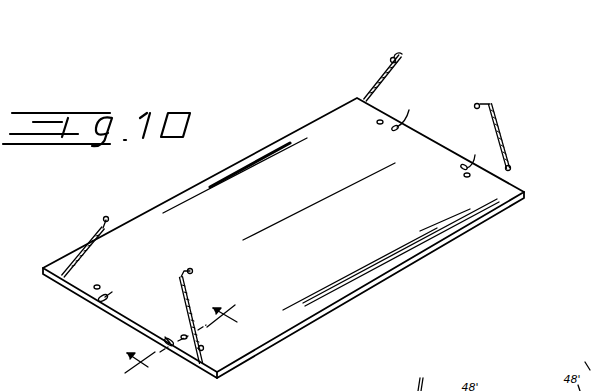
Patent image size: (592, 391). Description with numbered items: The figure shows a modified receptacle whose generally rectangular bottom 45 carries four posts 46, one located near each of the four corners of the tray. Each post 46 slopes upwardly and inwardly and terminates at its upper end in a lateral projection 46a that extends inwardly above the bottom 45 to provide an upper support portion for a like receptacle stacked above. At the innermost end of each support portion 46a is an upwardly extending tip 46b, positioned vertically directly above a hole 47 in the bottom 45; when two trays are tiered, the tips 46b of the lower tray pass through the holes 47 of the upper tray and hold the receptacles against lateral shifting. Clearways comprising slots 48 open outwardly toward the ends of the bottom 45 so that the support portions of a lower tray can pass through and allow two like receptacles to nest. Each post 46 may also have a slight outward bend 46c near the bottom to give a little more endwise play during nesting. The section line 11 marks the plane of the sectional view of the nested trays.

The bottom 45 is at (283, 238).
The post 46 is at (384, 75).
The lateral projection 46a is at (401, 54).
The upwardly extending tip 46b is at (391, 58).
The outward bend 46c is at (512, 168).
The hole 47 is at (377, 123).
The slot 48 is at (409, 118).
The section line 11- 11 is at (194, 348).